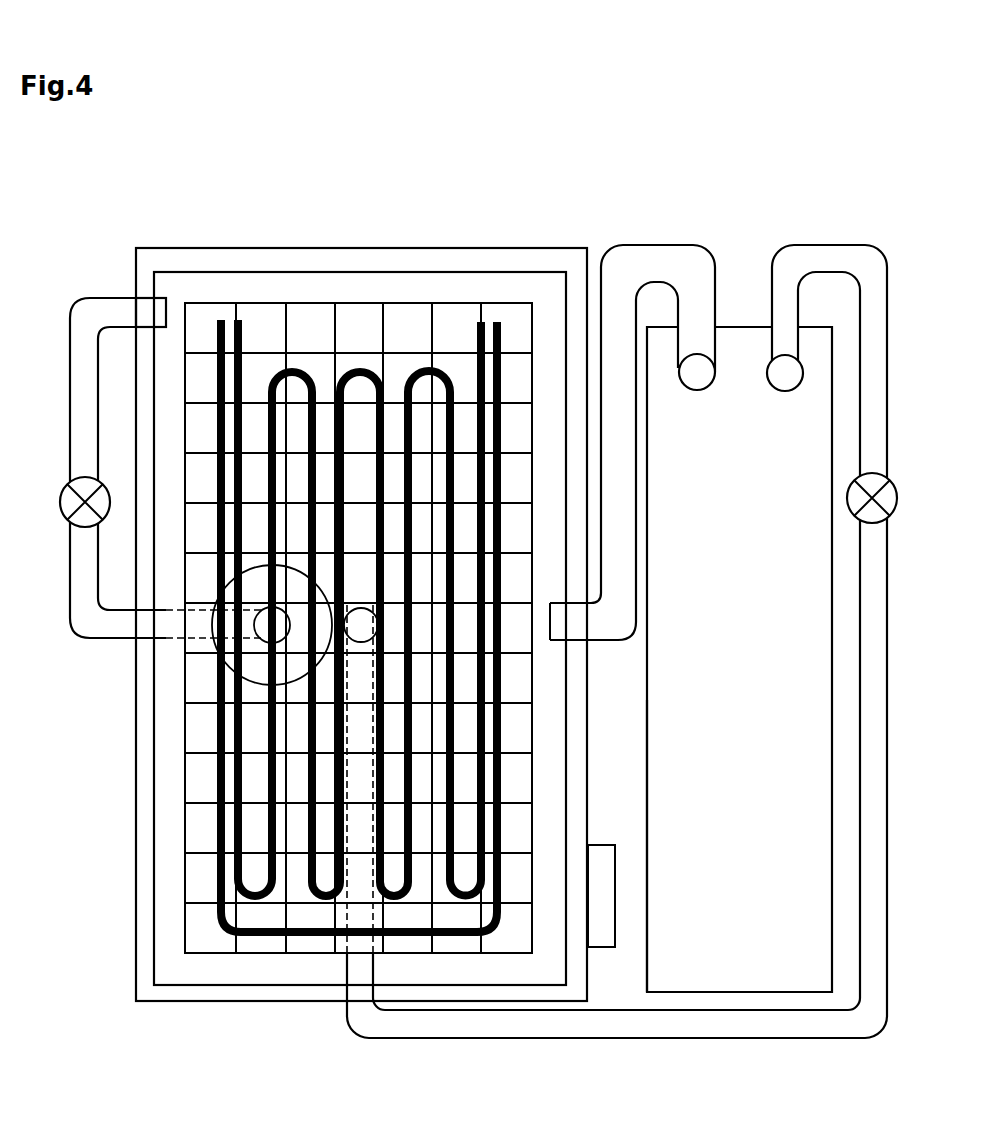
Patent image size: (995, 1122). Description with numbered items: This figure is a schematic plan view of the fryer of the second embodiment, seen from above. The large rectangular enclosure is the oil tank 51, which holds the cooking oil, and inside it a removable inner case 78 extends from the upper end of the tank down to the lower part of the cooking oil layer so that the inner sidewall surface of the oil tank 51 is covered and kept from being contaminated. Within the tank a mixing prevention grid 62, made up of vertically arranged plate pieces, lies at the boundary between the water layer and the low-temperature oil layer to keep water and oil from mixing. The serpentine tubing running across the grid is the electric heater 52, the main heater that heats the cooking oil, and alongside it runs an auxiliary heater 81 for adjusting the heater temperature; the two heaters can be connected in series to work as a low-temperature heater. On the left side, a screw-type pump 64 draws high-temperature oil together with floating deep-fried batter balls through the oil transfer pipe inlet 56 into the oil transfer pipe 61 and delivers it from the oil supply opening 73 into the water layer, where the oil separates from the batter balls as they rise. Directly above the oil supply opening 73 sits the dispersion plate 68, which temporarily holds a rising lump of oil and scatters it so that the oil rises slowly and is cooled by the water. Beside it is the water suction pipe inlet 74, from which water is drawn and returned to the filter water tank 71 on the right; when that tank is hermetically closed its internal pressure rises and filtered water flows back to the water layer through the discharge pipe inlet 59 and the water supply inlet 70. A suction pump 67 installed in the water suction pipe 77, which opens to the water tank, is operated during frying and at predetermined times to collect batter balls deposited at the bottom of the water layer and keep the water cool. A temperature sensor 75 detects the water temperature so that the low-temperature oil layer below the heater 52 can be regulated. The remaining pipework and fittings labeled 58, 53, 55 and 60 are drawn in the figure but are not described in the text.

The oil tank 51 is at (140, 247).
The inner case 78 is at (215, 272).
The mixing prevention grid 62 is at (322, 303).
The electric heater 52 is at (365, 372).
The auxiliary heater 81 is at (498, 322).
The oil transfer pipe inlet 56 is at (160, 318).
The oil transfer pipe 61 is at (82, 407).
The screw-type pump 64 is at (92, 481).
The dispersion plate 68 is at (253, 588).
The oil supply opening 73 is at (265, 625).
The water suction pipe inlet 74 is at (362, 628).
The water supply inlet 70 is at (555, 618).
The pipe 58 is at (615, 350).
The tank 53 is at (705, 247).
The filter water tank 71 is at (650, 718).
The pipe 55 is at (880, 247).
The water suction pipe 77 is at (347, 1027).
The discharge pipe inlet 59 is at (689, 386).
The float 60 is at (790, 391).
The suction pump 67 is at (870, 498).
The temperature sensor 75 is at (603, 897).